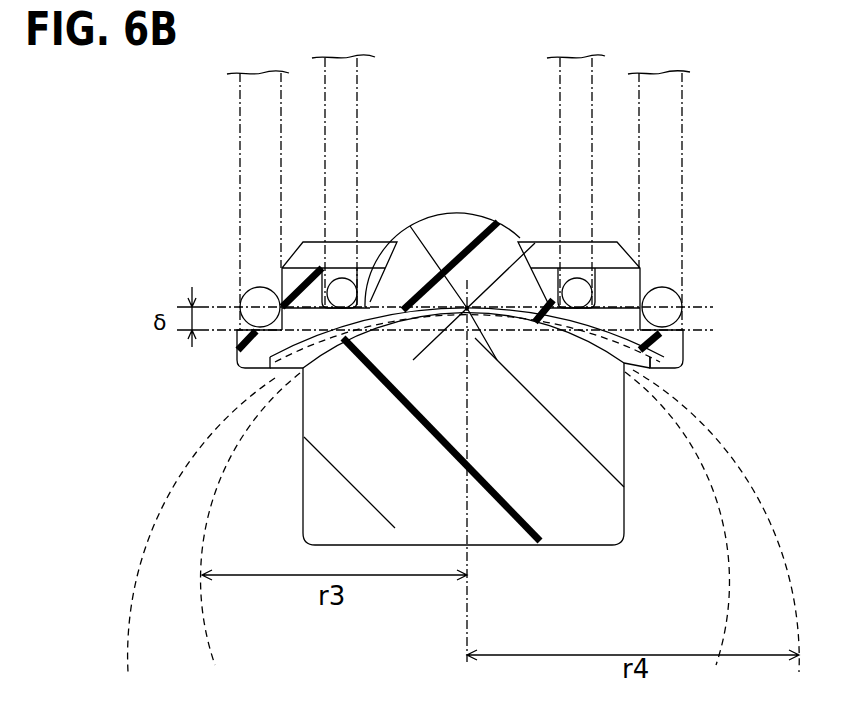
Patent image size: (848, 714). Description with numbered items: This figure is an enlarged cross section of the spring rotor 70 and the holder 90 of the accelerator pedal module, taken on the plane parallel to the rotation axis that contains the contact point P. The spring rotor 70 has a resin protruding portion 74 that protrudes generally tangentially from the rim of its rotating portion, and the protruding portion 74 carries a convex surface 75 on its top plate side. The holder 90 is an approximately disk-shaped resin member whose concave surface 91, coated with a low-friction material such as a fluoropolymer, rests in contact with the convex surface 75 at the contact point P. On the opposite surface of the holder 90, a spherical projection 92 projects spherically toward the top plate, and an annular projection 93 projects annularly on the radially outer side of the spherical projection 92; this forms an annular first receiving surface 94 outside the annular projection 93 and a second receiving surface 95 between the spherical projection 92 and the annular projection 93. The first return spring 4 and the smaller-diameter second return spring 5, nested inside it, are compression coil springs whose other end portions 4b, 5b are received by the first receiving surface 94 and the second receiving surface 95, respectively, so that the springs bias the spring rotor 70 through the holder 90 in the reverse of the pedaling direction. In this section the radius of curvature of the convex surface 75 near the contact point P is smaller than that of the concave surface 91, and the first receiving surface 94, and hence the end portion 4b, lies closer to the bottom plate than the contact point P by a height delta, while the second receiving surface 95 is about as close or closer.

The first return spring 4 is at (667, 96).
The second return spring 5 is at (578, 128).
The other end portion of the first return spring 4b is at (668, 318).
The other end portion of the second return spring 5b is at (573, 285).
The spring rotor 70 is at (624, 528).
The protruding portion 74 is at (300, 495).
The convex surface 75 is at (467, 308).
The holder 90 is at (685, 345).
The concave surface 91 is at (440, 335).
The spherical projection 92 is at (458, 214).
The annular projection 93 is at (638, 272).
The first receiving surface 94 is at (687, 310).
The second receiving surface 95 is at (584, 298).
The contact point P is at (467, 308).